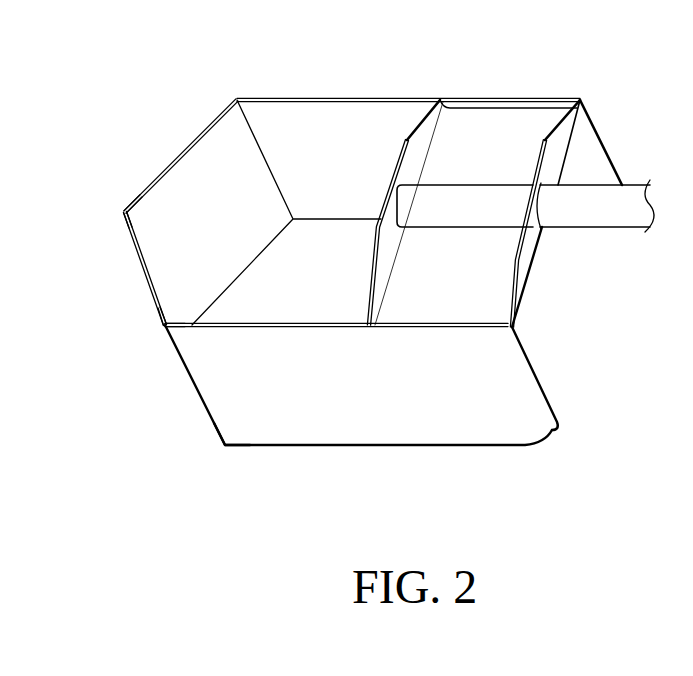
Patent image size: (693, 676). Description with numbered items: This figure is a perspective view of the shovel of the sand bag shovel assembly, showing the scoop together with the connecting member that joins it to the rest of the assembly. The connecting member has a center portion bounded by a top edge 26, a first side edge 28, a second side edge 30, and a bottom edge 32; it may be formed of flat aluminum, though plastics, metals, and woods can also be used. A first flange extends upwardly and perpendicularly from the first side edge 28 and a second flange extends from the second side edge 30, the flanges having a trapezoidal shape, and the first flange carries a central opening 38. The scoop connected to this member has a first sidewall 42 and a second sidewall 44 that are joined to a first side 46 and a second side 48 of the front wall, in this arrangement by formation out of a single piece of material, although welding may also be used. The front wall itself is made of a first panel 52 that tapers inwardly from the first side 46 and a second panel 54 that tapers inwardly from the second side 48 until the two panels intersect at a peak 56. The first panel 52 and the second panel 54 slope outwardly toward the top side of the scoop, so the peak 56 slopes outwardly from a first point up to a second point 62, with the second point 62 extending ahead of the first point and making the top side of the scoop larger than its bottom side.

The top edge 26 is at (508, 105).
The side edge 28 is at (568, 152).
The side edge 30 is at (437, 133).
The bottom edge 32 is at (462, 327).
The central opening 38 is at (542, 230).
The first sidewall 42 is at (350, 128).
The second sidewall 44 is at (348, 418).
The first side 46 is at (235, 98).
The second side 48 is at (222, 448).
The first panel 52 is at (177, 155).
The second panel 54 is at (160, 315).
The peak 56 is at (137, 253).
The second point 62 is at (123, 211).